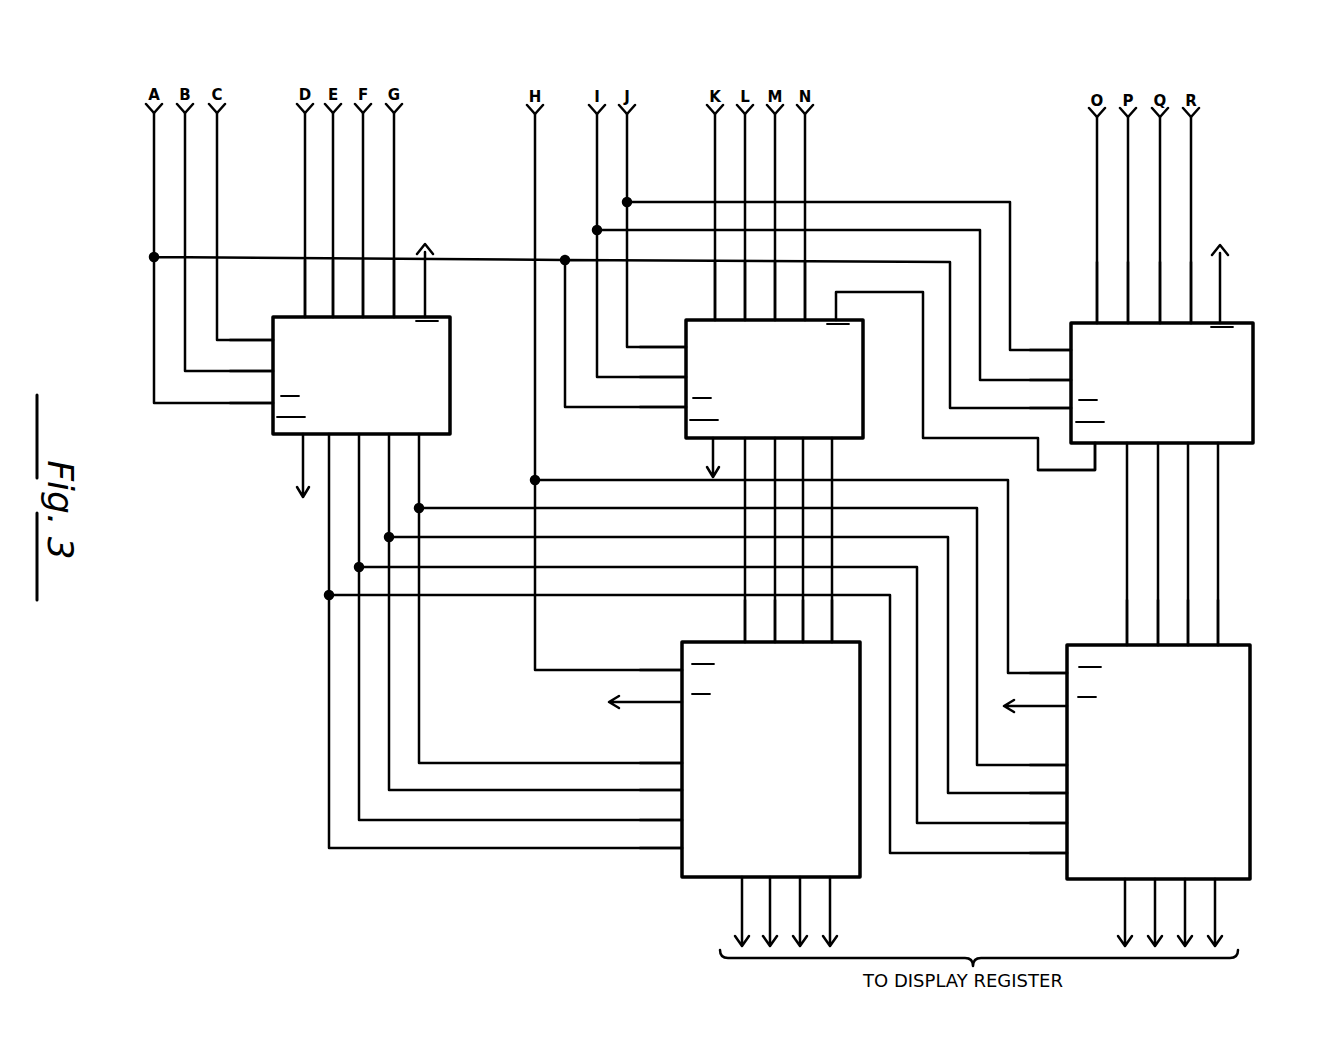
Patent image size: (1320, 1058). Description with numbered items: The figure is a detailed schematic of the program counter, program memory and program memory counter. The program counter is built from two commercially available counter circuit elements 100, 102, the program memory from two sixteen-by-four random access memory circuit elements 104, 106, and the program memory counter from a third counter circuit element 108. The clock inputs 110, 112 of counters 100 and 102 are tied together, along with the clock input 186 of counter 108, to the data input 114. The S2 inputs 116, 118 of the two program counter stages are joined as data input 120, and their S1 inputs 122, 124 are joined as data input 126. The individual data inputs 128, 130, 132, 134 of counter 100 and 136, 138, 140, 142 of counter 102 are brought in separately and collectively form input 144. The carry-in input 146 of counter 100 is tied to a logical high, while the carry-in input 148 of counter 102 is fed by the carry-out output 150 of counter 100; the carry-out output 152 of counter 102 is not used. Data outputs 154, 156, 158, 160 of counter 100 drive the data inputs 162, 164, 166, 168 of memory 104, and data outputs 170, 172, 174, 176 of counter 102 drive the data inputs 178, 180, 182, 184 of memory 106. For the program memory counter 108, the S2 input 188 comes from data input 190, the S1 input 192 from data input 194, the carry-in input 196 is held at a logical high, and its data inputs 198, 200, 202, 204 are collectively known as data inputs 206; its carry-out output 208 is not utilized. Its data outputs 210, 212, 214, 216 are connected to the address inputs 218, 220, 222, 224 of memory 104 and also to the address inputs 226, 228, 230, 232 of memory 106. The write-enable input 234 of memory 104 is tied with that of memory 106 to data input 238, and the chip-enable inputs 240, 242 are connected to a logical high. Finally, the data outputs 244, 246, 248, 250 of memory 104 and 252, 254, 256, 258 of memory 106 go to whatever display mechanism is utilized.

The counter circuit element 100 is at (1255, 384).
The counter circuit element 102 is at (865, 382).
The random access memory circuit element 104 is at (1252, 882).
The random access memory circuit element 106 is at (862, 880).
The counter circuit element 108 is at (452, 380).
The CLK input 110 is at (1060, 412).
The CLK input 112 is at (681, 407).
The data input 114 is at (604, 235).
The S2 input 116 is at (1060, 382).
The S2 input 118 is at (681, 377).
The data input 120 is at (826, 221).
The S1 input 122 is at (1060, 352).
The S1 input 124 is at (681, 345).
The data input 126 is at (841, 206).
The data input of counter 100 128 is at (1190, 319).
The data input of counter 100 130 is at (1159, 319).
The data input of counter 100 132 is at (1127, 319).
The data input of counter 100 134 is at (1096, 319).
The data input of counter 102 136 is at (804, 316).
The data input of counter 102 138 is at (774, 316).
The data input of counter 102 140 is at (744, 316).
The data input of counter 102 142 is at (714, 316).
The collective data input 144 is at (692, 92).
The Cin input 146 is at (1219, 319).
The Cin input 148 is at (843, 295).
The Cout output 150 is at (1095, 458).
The Cout output 152 is at (715, 438).
The Q output of counter 100 154 is at (1218, 443).
The Q output of counter 100 156 is at (1188, 443).
The Q output of counter 100 158 is at (1158, 443).
The Q output of counter 100 160 is at (1127, 443).
The D input of RAM 104 162 is at (1218, 638).
The D input of RAM 104 164 is at (1188, 638).
The D input of RAM 104 166 is at (1158, 638).
The D input of RAM 104 168 is at (1127, 638).
The Q output of counter 102 170 is at (832, 438).
The Q output of counter 102 172 is at (803, 438).
The Q output of counter 102 174 is at (775, 438).
The Q output of counter 102 176 is at (745, 438).
The D input of RAM 106 178 is at (832, 640).
The D input of RAM 106 180 is at (803, 640).
The D input of RAM 106 182 is at (775, 640).
The D input of RAM 106 184 is at (745, 640).
The CLK input 186 is at (270, 406).
The S2 input 188 is at (270, 374).
The data input 190 is at (221, 216).
The S1 input 192 is at (270, 338).
The data input 194 is at (237, 201).
The Cin input 196 is at (426, 313).
The data input of counter 108 198 is at (395, 313).
The data input of counter 108 200 is at (364, 313).
The data input of counter 108 202 is at (334, 313).
The data input of counter 108 204 is at (304, 313).
The data inputs 206 is at (283, 84).
The Cout output 208 is at (304, 438).
The Q output of counter 108 210 is at (423, 438).
The Q output of counter 108 212 is at (393, 438).
The Q output of counter 108 214 is at (363, 438).
The Q output of counter 108 216 is at (333, 438).
The address input of RAM 104 218 is at (1062, 764).
The address input of RAM 104 220 is at (1062, 792).
The address input of RAM 104 222 is at (1062, 822).
The address input of RAM 104 224 is at (1062, 852).
The address input of RAM 106 226 is at (673, 760).
The address input of RAM 106 228 is at (673, 789).
The address input of RAM 106 230 is at (673, 818).
The address input of RAM 106 232 is at (673, 847).
The WE input 234 is at (1062, 672).
The data input 238 is at (793, 367).
The CE input 240 is at (1062, 702).
The CE input 242 is at (673, 701).
The Q output of RAM 104 244 is at (1226, 884).
The Q output of RAM 104 246 is at (1196, 884).
The Q output of RAM 104 248 is at (1166, 884).
The Q output of RAM 104 250 is at (1136, 884).
The Q output of RAM 106 252 is at (841, 884).
The Q output of RAM 106 254 is at (811, 884).
The Q output of RAM 106 256 is at (673, 669).
The Q output of RAM 106 258 is at (753, 884).